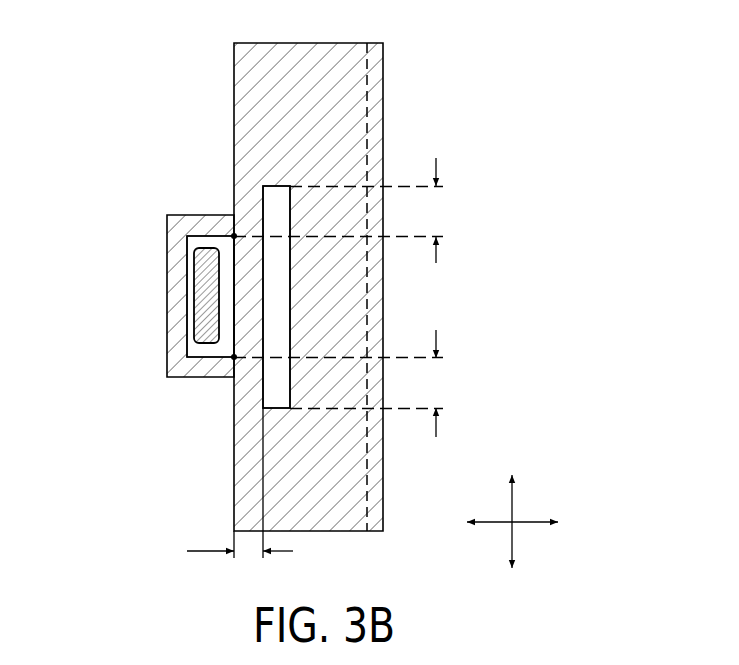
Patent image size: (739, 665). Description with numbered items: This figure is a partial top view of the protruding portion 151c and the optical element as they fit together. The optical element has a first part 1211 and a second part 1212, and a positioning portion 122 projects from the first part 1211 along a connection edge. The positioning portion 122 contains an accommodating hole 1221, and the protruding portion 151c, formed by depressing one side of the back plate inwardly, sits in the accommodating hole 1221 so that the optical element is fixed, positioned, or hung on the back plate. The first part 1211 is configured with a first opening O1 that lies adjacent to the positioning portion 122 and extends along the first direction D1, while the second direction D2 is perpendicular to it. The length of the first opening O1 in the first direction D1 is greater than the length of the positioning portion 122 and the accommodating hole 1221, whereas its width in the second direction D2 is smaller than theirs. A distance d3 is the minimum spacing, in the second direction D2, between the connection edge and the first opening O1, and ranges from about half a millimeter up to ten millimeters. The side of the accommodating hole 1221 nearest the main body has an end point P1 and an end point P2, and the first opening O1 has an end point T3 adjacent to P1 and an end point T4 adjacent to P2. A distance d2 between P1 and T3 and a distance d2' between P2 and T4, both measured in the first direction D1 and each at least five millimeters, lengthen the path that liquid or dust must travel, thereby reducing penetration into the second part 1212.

The first part 1211 is at (282, 90).
The second part 1212 is at (378, 52).
The positioning portion 122 is at (177, 333).
The accommodating hole 1221 is at (200, 242).
The protruding portion 151c is at (205, 273).
The end point P1 is at (234, 236).
The end point P2 is at (234, 357).
The end point T3 is at (290, 186).
The end point T4 is at (290, 408).
The first opening O1 is at (273, 198).
The distance d2 is at (450, 210).
The distance d2' is at (452, 383).
The distance d3 is at (240, 483).
The first direction D1 is at (516, 511).
The second direction D2 is at (528, 523).